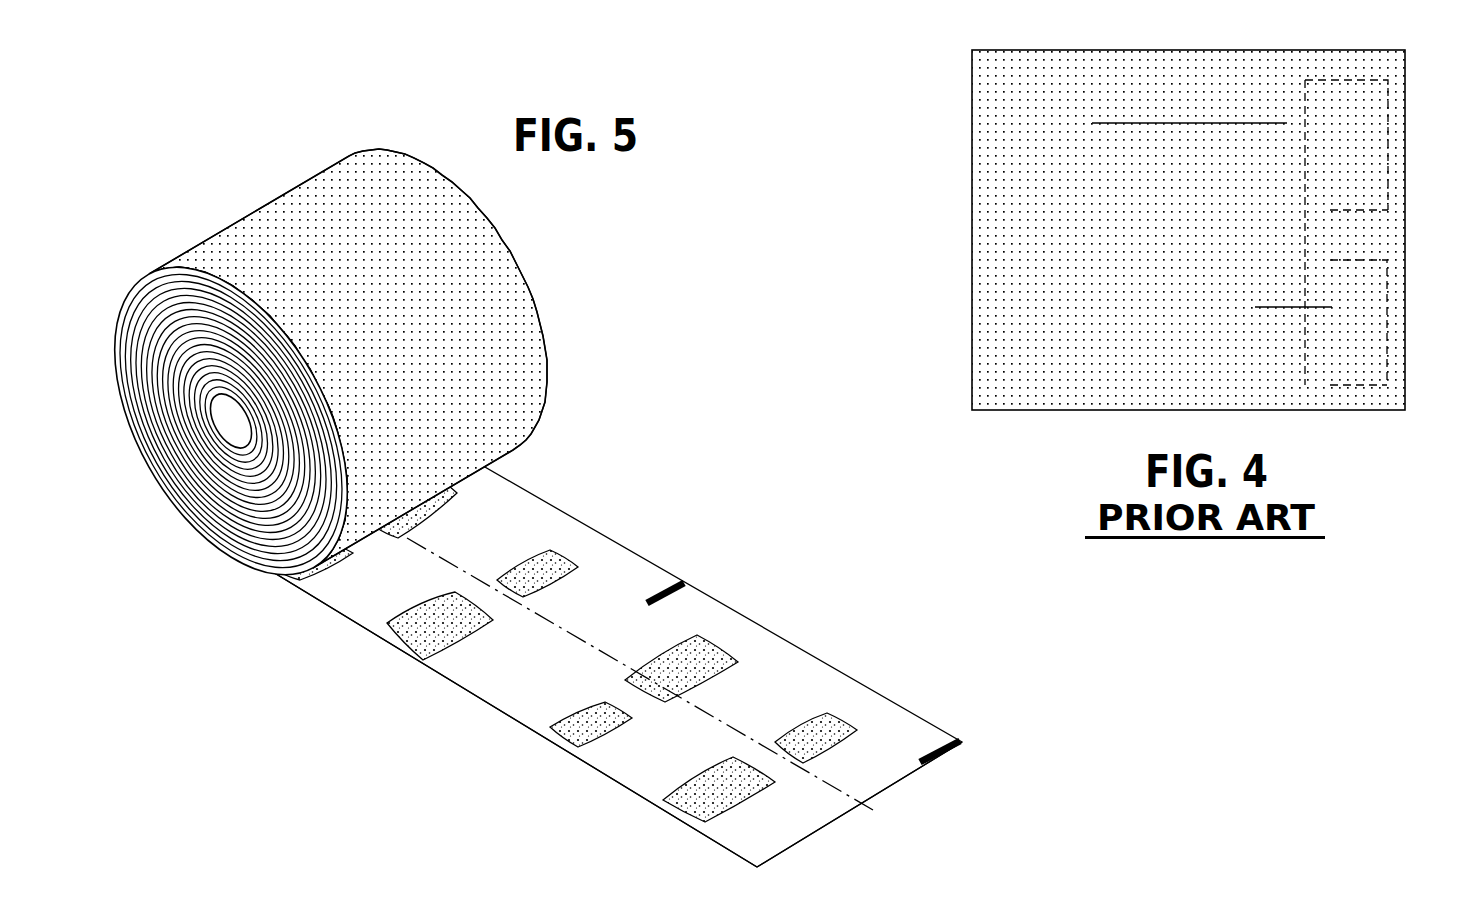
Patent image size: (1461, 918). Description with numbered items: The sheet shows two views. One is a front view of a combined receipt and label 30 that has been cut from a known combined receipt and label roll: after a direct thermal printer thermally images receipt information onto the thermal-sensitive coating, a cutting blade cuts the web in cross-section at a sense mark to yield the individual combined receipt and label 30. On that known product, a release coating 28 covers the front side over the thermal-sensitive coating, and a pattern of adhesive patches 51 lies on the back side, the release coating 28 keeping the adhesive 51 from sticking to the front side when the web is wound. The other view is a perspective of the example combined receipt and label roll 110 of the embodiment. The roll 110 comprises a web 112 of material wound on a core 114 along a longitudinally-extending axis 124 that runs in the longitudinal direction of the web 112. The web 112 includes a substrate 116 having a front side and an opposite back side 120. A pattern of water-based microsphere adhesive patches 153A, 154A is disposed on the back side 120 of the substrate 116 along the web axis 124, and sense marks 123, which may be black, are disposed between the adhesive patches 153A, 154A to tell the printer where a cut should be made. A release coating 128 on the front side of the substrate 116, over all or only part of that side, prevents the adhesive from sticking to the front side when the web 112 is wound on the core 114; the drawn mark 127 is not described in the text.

In FIG. 4, the release coating 28 is at (978, 339).
In FIG. 4, the combined receipt and label 30 is at (1148, 205).
In FIG. 4, the adhesive patches 51 is at (1390, 122).
In FIG. 5, the combined receipt and label roll 110 is at (372, 406).
In FIG. 5, the web 112 is at (417, 152).
In FIG. 5, the core 114 is at (228, 423).
In FIG. 5, the substrate 116 is at (500, 713).
In FIG. 5, the back side 120 is at (365, 603).
In FIG. 5, the sense marks 123 is at (947, 757).
In FIG. 5, the longitudinally-extending axis 124 is at (877, 810).
In FIG. 5, the sensing mark 127 is at (680, 585).
In FIG. 5, the release coating 128 is at (274, 237).
In FIG. 5, the water-based microsphere adhesive patch 153A is at (560, 560).
In FIG. 5, the water-based microsphere adhesive patch 154A is at (417, 637).